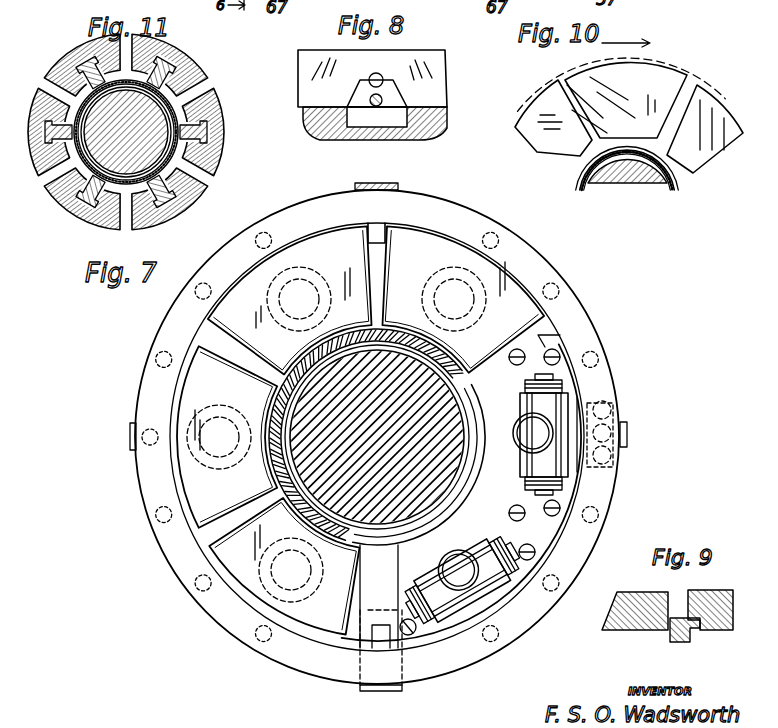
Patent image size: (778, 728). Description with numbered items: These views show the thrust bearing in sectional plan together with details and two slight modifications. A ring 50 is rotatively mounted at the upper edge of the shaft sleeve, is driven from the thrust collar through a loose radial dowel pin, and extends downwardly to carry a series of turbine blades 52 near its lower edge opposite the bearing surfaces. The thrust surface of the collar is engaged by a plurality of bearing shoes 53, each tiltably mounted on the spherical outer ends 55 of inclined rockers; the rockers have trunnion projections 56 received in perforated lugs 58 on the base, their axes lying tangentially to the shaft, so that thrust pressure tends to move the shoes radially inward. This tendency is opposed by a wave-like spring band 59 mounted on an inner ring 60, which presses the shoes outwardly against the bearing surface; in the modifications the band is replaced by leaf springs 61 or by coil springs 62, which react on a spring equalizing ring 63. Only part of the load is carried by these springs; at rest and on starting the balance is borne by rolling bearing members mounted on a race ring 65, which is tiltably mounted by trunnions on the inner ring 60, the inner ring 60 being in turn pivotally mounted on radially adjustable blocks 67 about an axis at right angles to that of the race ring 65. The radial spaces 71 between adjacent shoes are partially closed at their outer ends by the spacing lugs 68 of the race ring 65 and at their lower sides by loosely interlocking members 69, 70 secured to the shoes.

In FIG. 7, the ring 50 is at (272, 482).
In FIG. 7, the turbine blades 52 is at (275, 476).
In FIG. 7, the bearing shoes 53 is at (570, 262).
In FIG. 10, the bearing shoes 53 is at (662, 138).
In FIG. 7, the spherical outer ends 55 is at (552, 420).
In FIG. 7, the trunnion projections 56 is at (548, 376).
In FIG. 7, the perforated lugs 58 is at (560, 379).
In FIG. 7, the spring band 59 is at (480, 487).
In FIG. 8, the inner ring 60 is at (436, 60).
In FIG. 10, the leaf springs 61 is at (676, 188).
In FIG. 11, the coil springs 62 is at (205, 126).
In FIG. 11, the spring equalizing ring 63 is at (207, 178).
In FIG. 10, the spring equalizing ring 63 is at (676, 193).
In FIG. 7, the race ring 65 is at (165, 327).
In FIG. 8, the radially adjustable blocks 67 is at (360, 110).
In FIG. 7, the spacing lugs 68 is at (378, 232).
In FIG. 9, the interlocking member 69 is at (668, 632).
In FIG. 9, the interlocking member 70 is at (688, 640).
In FIG. 7, the radial spaces 71 is at (227, 353).